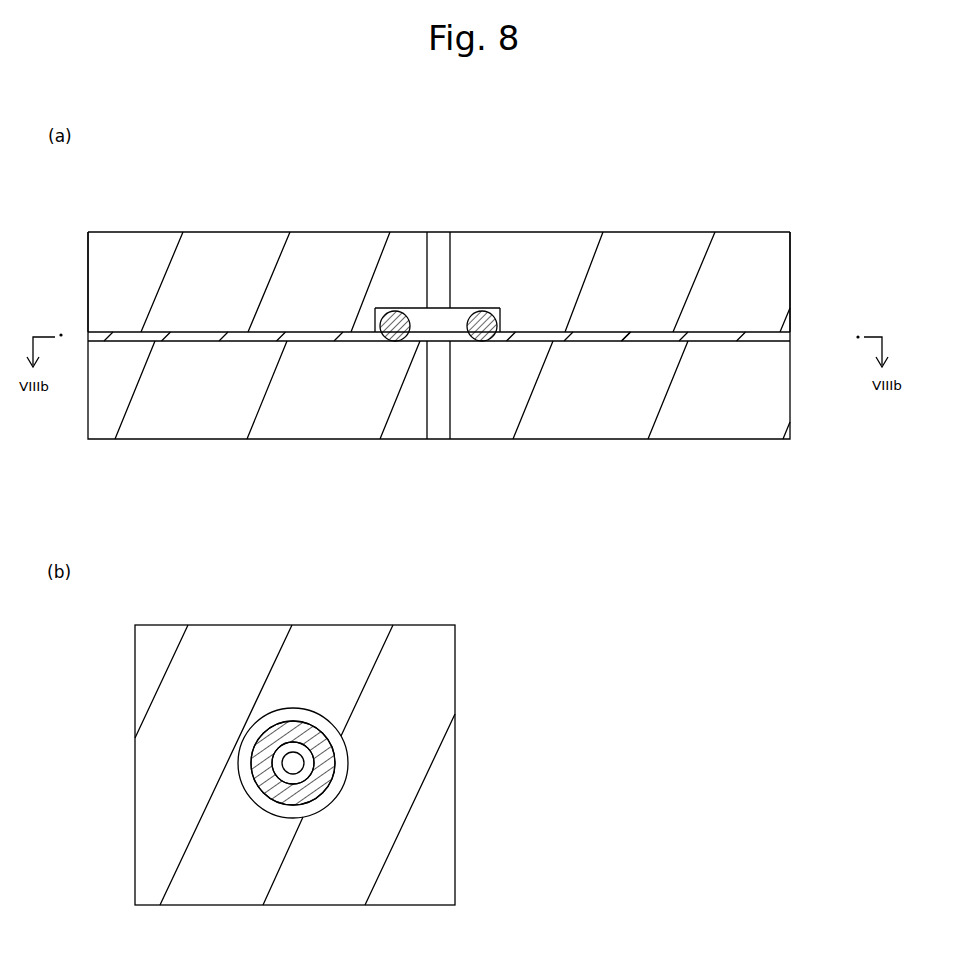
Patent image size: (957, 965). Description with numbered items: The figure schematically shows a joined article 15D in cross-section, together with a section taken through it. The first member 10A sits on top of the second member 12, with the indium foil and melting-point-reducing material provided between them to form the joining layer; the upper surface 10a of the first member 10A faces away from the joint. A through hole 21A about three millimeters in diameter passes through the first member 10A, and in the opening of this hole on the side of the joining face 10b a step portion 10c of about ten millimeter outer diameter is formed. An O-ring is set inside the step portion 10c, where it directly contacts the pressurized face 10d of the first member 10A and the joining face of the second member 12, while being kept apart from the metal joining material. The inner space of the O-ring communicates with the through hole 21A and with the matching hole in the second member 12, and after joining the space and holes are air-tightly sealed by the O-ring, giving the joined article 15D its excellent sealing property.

The joined article 15D is at (801, 223).
The first member 10A is at (775, 282).
The upper surface of first substrate 10a is at (603, 232).
The joining face 10b is at (695, 342).
The step portion 10c is at (478, 308).
The pressurized face 10d is at (455, 308).
The second member 12 is at (780, 410).
The through hole 21A is at (428, 262).